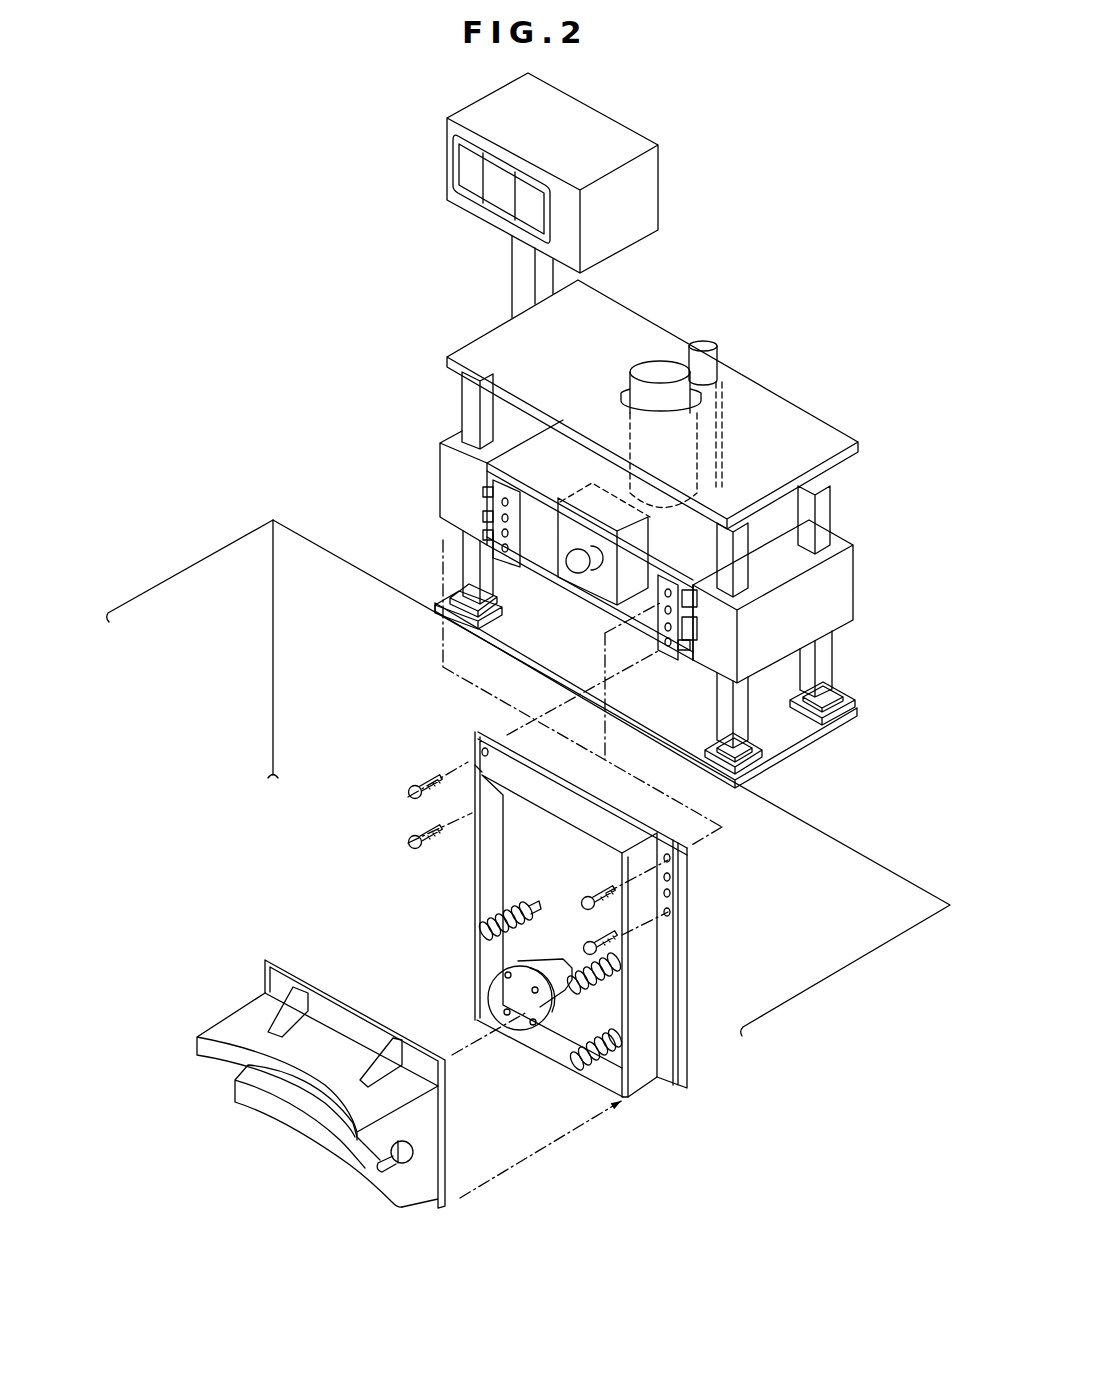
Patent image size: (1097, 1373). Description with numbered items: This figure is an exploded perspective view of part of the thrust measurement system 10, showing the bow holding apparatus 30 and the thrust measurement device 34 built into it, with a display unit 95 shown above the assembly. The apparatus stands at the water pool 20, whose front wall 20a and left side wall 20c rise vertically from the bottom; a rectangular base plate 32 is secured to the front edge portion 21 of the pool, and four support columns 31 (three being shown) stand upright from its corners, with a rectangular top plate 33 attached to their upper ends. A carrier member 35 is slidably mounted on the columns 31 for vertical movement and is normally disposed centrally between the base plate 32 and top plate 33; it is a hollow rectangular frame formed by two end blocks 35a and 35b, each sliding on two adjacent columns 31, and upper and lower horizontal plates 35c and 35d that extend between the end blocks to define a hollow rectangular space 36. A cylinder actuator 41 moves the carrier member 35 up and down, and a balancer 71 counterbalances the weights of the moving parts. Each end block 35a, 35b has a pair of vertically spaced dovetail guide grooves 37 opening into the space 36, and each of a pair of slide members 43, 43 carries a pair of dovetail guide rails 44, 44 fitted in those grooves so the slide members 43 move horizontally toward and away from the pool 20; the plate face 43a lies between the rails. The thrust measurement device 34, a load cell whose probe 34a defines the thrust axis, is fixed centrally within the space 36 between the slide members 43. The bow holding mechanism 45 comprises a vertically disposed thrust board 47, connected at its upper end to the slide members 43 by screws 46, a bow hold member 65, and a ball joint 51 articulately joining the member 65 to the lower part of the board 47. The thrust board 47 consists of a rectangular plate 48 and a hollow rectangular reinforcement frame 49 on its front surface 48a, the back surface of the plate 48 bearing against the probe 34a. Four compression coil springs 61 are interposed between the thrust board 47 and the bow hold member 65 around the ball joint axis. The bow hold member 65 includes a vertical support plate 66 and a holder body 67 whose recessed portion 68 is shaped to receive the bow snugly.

The apparatus 10 is at (232, 338).
The water pool 20 is at (160, 605).
The front wall 20a is at (847, 873).
The left side wall 20c is at (228, 568).
The front edge portion 21 is at (529, 760).
The bow holding apparatus 30 is at (848, 366).
The support column 31 is at (470, 392).
The base plate 32 is at (788, 728).
The top plate 33 is at (510, 345).
The thrust measurement device 34 is at (515, 597).
The probe 34a is at (583, 568).
The carrier member 35 is at (843, 572).
The end block 35a is at (440, 480).
The end block 35b is at (820, 606).
The upper horizontal plate 35c is at (548, 455).
The lower horizontal plate 35d is at (565, 598).
The hollow rectangular space 36 is at (692, 590).
The guide groove 37 is at (700, 588).
The cylinder actuator 41 is at (722, 355).
The slide member 43 is at (485, 617).
The mounting plate face 43a is at (525, 545).
The guide rail 44 is at (488, 549).
The bow holding mechanism 45 is at (720, 879).
The screw 46 is at (408, 840).
The thrust board 47 is at (858, 1000).
The plate 48 is at (660, 914).
The front surface 48a is at (670, 967).
The reinforcement frame 49 is at (647, 1023).
The ball joint 51 is at (556, 1012).
The compression coil spring 61 is at (488, 1000).
The bow hold member 65 is at (272, 853).
The support plate 66 is at (268, 958).
The holder body 67 is at (228, 1022).
The recessed portion 68 is at (288, 1085).
The balancer 71 is at (678, 372).
The display unit 95 is at (470, 160).